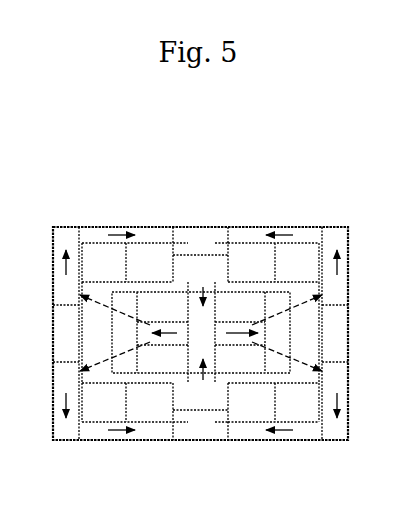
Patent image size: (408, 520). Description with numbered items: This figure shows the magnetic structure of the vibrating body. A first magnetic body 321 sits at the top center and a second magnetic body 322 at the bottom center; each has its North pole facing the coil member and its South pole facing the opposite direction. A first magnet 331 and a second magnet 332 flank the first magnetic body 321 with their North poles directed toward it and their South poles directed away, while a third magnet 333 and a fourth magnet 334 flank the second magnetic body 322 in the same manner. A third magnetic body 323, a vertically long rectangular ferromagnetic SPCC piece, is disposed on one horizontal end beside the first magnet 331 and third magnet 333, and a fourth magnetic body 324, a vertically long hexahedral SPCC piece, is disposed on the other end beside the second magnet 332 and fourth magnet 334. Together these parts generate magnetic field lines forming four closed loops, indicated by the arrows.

The first magnetic body 321 is at (197, 228).
The second magnetic body 322 is at (187, 430).
The third magnetic body 323 is at (67, 228).
The fourth magnetic body 324 is at (340, 233).
The first magnet 331 is at (153, 240).
The second magnet 332 is at (300, 242).
The third magnet 333 is at (102, 428).
The fourth magnet 334 is at (310, 428).